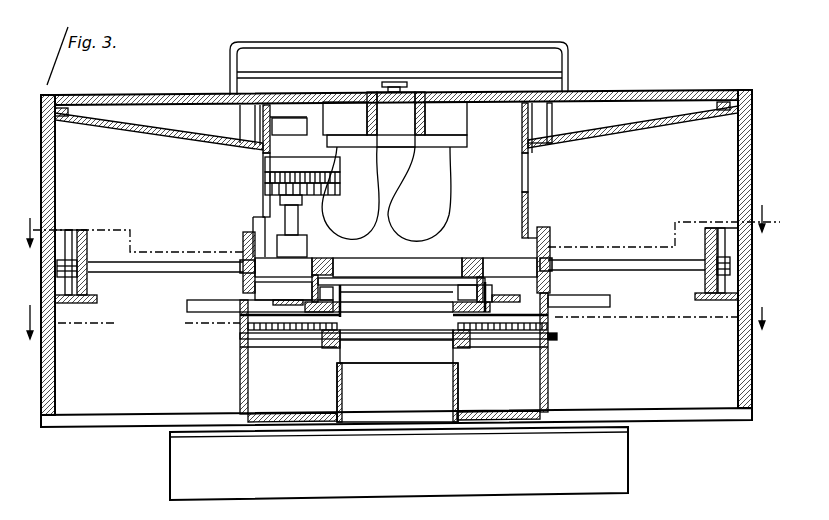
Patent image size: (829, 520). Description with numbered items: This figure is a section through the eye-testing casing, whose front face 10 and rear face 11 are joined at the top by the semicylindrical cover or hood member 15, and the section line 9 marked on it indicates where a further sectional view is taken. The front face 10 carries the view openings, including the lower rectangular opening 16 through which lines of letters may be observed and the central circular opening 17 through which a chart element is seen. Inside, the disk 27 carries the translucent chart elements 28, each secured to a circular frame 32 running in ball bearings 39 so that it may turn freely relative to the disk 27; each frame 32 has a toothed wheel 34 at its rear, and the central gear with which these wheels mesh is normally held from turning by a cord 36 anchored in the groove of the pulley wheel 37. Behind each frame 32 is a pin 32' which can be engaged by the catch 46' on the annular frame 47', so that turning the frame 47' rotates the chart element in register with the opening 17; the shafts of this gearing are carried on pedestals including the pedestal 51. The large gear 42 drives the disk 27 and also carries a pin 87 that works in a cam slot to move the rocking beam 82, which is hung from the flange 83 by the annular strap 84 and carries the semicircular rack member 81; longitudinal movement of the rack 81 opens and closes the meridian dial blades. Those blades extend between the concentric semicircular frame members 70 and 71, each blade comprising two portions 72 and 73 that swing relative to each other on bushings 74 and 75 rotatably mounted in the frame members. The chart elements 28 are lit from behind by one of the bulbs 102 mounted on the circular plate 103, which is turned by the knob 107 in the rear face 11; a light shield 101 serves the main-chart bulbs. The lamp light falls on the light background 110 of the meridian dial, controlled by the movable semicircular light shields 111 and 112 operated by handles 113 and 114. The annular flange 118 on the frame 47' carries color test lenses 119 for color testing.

The front face 10 is at (128, 427).
The rear face 11 is at (165, 97).
The cover or hood member 15 is at (50, 385).
The central circular opening 17 is at (382, 405).
The disk 27 is at (557, 335).
The chart elements 28 is at (348, 352).
The circular frames 32 is at (475, 361).
The pin 32' is at (351, 361).
The toothed wheel 34 is at (238, 332).
The cord 36 is at (533, 307).
The pulley wheel 37 is at (422, 330).
The ball bearings 39 is at (340, 348).
The large gear 42 is at (265, 187).
The catch 46' is at (397, 297).
The annular frame 47' is at (502, 278).
The pedestal 51 is at (265, 152).
The semicircular frame member 70 is at (243, 233).
The semicircular frame member 71 is at (80, 230).
The blade portion 72 is at (645, 268).
The blade portion 73 is at (147, 273).
The bushing 74 is at (240, 268).
The bushing 75 is at (713, 267).
The semicircular rack member 81 is at (70, 230).
The rocking beam 82 is at (302, 265).
The flange 83 is at (470, 257).
The annular strap 84 is at (478, 257).
The pin 87 is at (350, 250).
The light shield 101 is at (422, 483).
The bulbs 102 is at (410, 190).
The circular plate 103 is at (453, 93).
The knob 107 is at (393, 82).
The light background 110 is at (147, 132).
The light shield 111 is at (530, 197).
The light shield 112 is at (530, 127).
The handle 113 is at (538, 72).
The handle 114 is at (547, 43).
The annular flange 118 is at (260, 296).
The color test lenses 119 is at (288, 300).
The lower rectangular opening 16 is at (399, 228).
The section line 9 is at (395, 322).